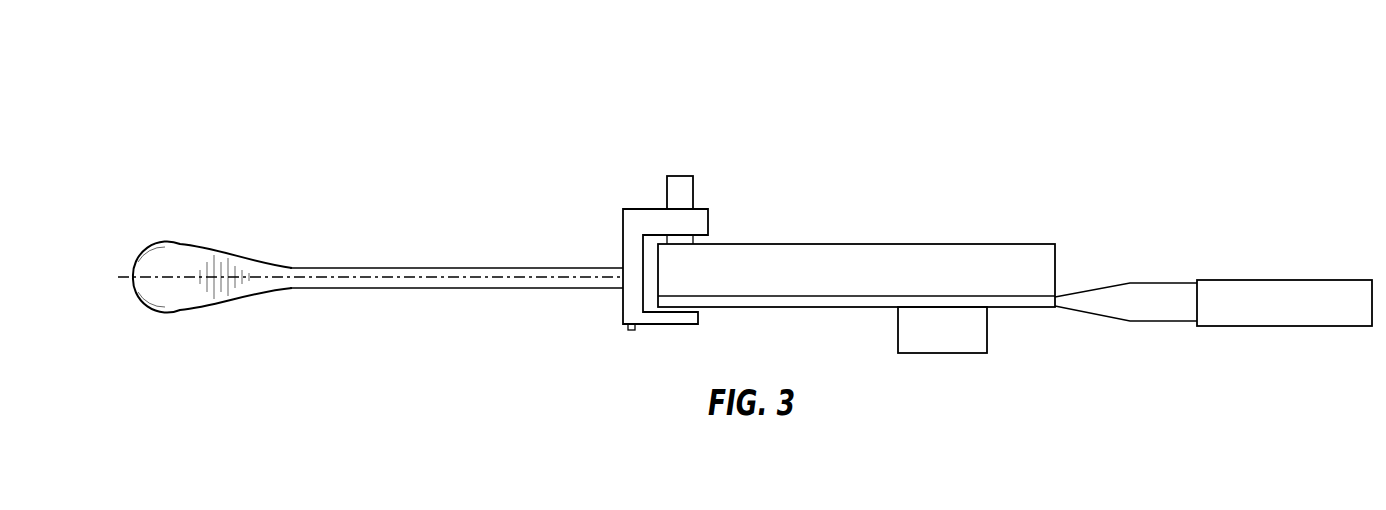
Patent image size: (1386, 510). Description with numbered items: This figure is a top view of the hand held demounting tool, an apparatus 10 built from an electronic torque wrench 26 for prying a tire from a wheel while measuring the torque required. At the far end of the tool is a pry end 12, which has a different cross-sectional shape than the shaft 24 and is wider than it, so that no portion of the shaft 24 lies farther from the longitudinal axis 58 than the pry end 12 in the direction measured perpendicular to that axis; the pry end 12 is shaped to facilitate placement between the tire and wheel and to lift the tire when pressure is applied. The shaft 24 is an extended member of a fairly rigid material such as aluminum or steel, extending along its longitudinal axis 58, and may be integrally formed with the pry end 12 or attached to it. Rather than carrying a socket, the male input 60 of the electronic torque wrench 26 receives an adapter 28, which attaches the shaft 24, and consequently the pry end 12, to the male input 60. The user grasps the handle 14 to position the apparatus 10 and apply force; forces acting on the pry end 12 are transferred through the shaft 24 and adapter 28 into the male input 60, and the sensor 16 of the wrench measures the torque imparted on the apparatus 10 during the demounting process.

The apparatus 10 is at (304, 99).
The pry end 12 is at (183, 296).
The handle 14 is at (1268, 308).
The sensor 16 is at (898, 328).
The shaft 24 is at (517, 289).
The electronic torque wrench 26 is at (1382, 163).
The adapter 28 is at (623, 222).
The longitudinal axis 58 is at (432, 278).
The male input 60 is at (666, 192).